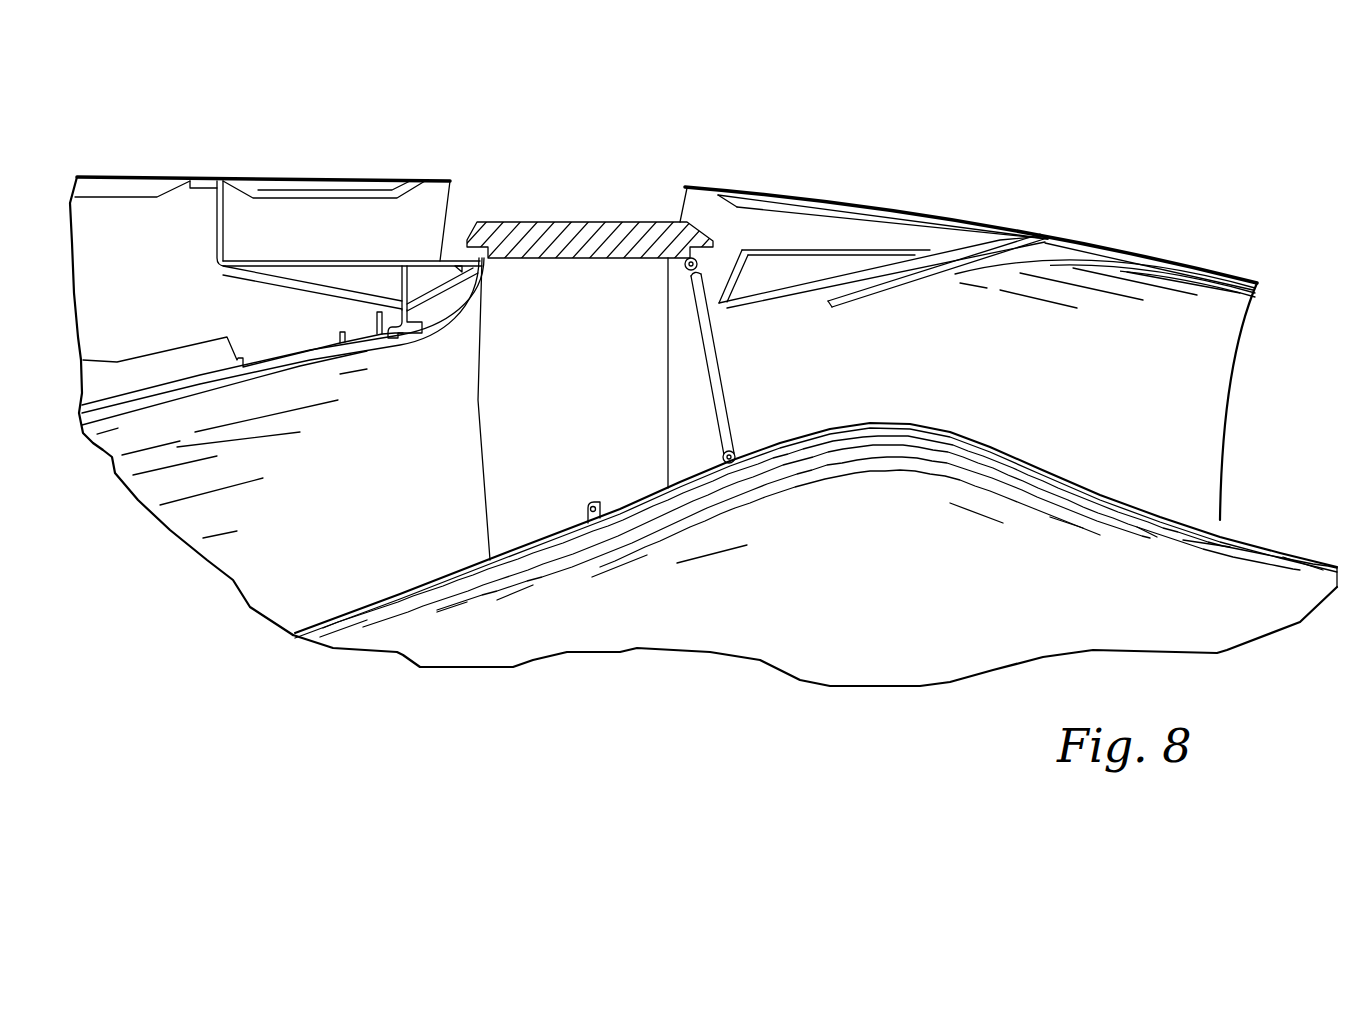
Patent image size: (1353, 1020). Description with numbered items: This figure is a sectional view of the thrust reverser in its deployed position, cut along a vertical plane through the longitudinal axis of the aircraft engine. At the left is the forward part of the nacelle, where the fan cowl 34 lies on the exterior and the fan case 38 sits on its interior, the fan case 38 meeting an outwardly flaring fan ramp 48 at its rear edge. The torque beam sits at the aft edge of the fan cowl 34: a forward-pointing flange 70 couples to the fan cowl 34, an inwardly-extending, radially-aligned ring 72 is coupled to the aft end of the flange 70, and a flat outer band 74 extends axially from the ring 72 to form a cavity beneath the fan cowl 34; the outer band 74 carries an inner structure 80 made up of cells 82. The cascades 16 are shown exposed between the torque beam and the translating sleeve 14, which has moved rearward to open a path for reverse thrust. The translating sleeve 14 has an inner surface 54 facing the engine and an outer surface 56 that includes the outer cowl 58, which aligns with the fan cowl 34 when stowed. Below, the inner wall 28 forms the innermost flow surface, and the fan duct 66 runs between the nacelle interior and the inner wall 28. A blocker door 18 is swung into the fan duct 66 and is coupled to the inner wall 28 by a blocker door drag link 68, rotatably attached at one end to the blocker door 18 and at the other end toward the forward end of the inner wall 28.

The translating sleeve 14 is at (838, 205).
The cascades 16 is at (587, 230).
The blocker door 18 is at (724, 365).
The inner wall 28 is at (1247, 577).
The fan cowl 34 is at (121, 188).
The fan case 38 is at (130, 403).
The fan ramp 48 is at (455, 325).
The inner surface 54 is at (993, 272).
The outer surface 56 is at (1023, 228).
The outer cowl 58 is at (684, 192).
The fan duct 66 is at (263, 587).
The blocker door drag link 68 is at (632, 489).
The forward-pointing flange 70 is at (203, 188).
The ring 72 is at (220, 235).
The flat outer band 74 is at (343, 261).
The inner structure 80 is at (332, 307).
The cells 82 is at (427, 280).